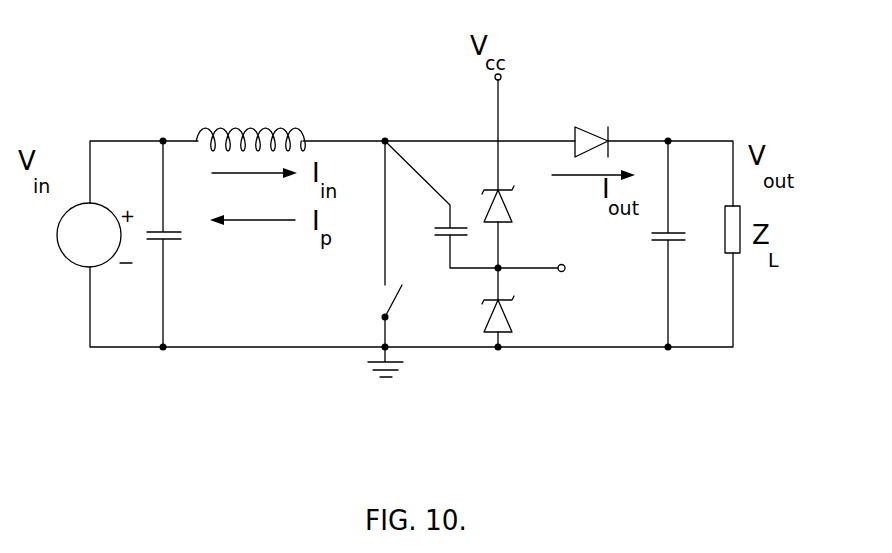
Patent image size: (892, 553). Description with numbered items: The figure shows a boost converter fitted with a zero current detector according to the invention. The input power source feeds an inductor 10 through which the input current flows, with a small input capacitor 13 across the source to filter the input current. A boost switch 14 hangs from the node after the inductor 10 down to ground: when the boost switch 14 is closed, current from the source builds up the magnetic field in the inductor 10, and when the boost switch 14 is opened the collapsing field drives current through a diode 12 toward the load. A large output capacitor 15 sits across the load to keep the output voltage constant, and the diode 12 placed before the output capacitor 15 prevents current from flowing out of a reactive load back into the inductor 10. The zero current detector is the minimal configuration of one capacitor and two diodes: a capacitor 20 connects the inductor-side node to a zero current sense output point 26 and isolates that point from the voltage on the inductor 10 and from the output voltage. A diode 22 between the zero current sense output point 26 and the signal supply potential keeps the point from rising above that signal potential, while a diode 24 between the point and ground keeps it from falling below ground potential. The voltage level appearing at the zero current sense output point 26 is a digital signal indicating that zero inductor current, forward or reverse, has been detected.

The inductor 10 is at (260, 125).
The diode 12 is at (595, 125).
The input capacitor 13 is at (180, 245).
The boost switch 14 is at (382, 300).
The output capacitor 15 is at (685, 247).
The capacitor 20 is at (437, 228).
The diode 22 is at (510, 220).
The diode 24 is at (512, 313).
The zero current sense output point 26 is at (568, 257).